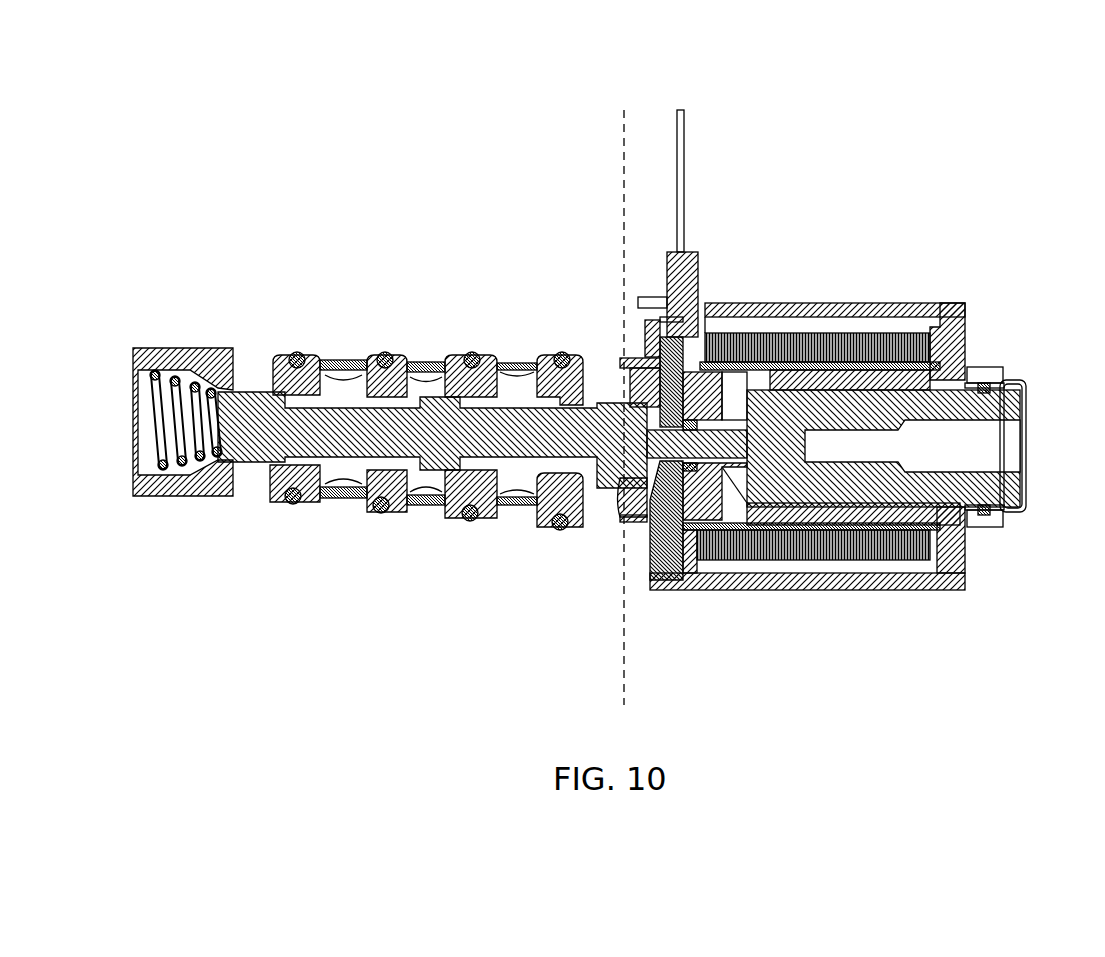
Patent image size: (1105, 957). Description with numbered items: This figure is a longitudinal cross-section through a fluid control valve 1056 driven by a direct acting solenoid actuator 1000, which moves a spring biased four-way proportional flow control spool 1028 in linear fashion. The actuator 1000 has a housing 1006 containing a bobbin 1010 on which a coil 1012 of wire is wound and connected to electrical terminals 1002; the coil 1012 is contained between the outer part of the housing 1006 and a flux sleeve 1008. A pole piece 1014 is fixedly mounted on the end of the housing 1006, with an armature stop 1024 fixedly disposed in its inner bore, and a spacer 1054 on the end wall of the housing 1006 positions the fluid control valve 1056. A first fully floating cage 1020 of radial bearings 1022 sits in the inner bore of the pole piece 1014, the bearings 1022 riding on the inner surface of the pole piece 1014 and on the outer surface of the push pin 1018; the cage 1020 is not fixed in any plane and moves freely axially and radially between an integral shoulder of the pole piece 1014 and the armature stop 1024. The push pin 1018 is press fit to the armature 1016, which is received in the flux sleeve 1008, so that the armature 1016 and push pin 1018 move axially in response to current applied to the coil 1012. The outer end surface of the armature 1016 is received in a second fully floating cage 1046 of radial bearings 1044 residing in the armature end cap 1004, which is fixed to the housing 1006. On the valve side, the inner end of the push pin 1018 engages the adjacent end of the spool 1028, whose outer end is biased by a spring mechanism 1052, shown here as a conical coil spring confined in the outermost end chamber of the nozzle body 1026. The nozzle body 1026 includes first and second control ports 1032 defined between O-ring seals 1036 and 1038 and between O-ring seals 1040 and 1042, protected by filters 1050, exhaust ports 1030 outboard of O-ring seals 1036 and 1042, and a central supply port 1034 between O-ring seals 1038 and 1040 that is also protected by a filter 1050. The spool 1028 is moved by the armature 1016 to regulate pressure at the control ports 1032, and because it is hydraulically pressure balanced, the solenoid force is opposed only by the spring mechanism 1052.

The direct acting solenoid actuator 1000 is at (908, 145).
The electrical terminals 1002 is at (682, 160).
The armature end cap 1004 is at (1012, 380).
The housing 1006 is at (900, 303).
The flux sleeve 1008 is at (966, 352).
The bobbin 1010 is at (667, 252).
The coil 1012 is at (915, 575).
The pole piece 1014 is at (705, 360).
The armature 1016 is at (790, 560).
The push pin 1018 is at (750, 385).
The first fully floating cage 1020 is at (640, 563).
The radial bearings 1022 is at (640, 360).
The armature stop 1024 is at (737, 505).
The nozzle body 1026 is at (258, 485).
The spool 1028 is at (520, 470).
The exhaust ports 1030 is at (250, 360).
The control ports 1032 is at (340, 368).
The central supply port 1034 is at (425, 365).
The O-ring seal 1036 is at (285, 353).
The O-ring seal 1038 is at (380, 353).
The O-ring seal 1040 is at (468, 352).
The O-ring seal 1042 is at (555, 350).
The radial bearings 1044 is at (985, 527).
The second fully floating cage 1046 is at (1005, 516).
The filters 1050 is at (335, 497).
The spring mechanism 1052 is at (183, 500).
The spacer 1054 is at (640, 297).
The fluid control valve 1056 is at (458, 108).